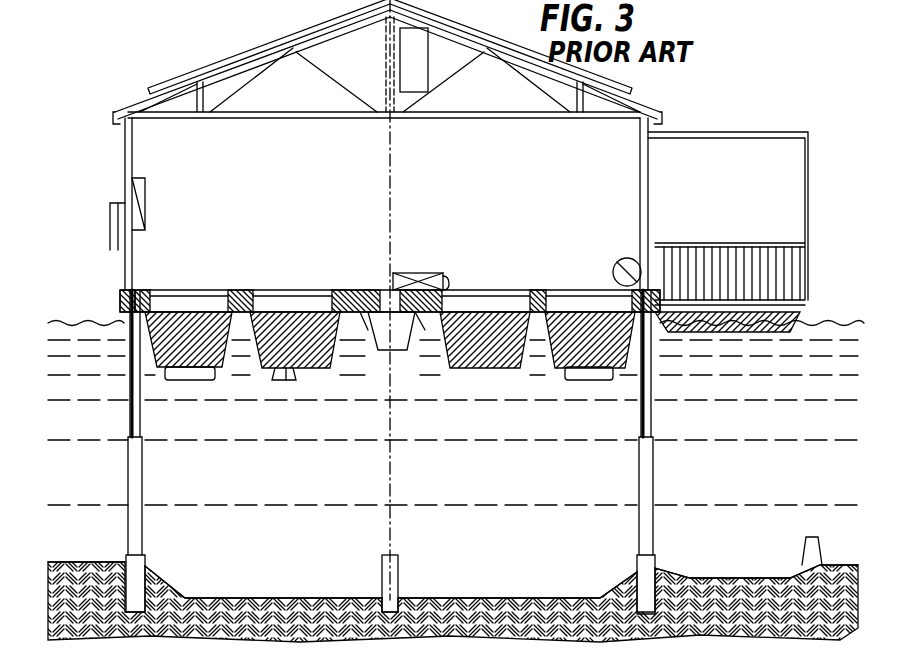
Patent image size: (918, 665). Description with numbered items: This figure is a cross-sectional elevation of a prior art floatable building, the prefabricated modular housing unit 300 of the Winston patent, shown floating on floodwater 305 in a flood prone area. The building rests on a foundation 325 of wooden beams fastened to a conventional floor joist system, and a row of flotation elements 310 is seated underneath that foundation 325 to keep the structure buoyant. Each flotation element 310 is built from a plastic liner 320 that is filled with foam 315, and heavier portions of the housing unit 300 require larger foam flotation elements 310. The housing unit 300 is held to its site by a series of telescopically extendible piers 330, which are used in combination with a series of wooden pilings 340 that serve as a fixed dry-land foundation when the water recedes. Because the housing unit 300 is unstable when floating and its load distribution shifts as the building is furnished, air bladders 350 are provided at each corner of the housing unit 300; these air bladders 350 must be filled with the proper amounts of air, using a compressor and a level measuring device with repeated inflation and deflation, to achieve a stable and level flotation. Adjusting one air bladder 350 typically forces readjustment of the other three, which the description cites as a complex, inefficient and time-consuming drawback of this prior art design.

The housing unit 300 is at (94, 613).
The floodwater 305 is at (72, 321).
The flotation elements 310 is at (325, 376).
The foam 315 is at (283, 372).
The plastic liners 320 is at (298, 378).
The foundation 325 is at (352, 290).
The telescopically extendible piers 330 is at (128, 477).
The wooden pilings 340 is at (400, 572).
The air bladders 350 is at (180, 383).